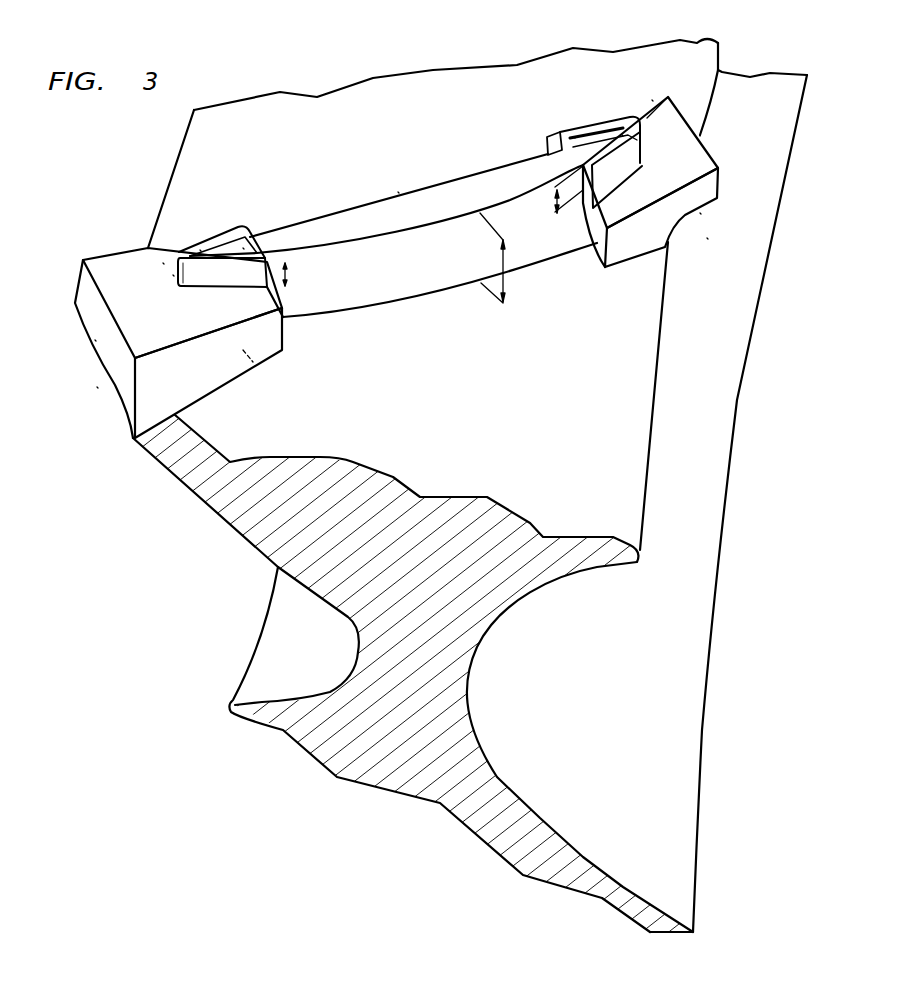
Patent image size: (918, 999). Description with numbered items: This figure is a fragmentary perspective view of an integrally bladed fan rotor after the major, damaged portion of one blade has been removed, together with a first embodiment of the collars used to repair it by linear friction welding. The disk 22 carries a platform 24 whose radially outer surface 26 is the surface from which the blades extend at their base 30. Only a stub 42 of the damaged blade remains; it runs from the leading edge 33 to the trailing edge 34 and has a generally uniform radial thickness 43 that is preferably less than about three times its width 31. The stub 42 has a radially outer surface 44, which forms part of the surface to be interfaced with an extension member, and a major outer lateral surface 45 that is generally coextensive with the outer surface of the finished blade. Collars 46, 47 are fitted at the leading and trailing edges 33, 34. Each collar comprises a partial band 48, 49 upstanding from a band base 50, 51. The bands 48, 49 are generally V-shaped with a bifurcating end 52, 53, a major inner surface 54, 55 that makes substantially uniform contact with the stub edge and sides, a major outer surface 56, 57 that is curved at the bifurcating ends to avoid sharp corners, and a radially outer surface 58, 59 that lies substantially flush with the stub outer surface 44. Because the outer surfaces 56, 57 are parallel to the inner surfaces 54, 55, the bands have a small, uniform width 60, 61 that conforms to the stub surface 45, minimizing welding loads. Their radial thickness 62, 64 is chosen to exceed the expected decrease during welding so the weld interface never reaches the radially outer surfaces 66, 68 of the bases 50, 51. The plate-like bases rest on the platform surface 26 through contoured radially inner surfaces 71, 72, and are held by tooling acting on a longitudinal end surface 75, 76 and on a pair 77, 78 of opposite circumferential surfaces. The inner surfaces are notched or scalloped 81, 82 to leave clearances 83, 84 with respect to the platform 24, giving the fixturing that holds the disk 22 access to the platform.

The disk 22 is at (751, 352).
The platform 24 is at (658, 355).
The radially outer surface 26 is at (597, 498).
The base 30 is at (393, 249).
The width 31 is at (398, 192).
The leading edge 33 is at (622, 135).
The trailing edge 34 is at (200, 250).
The stub portion 42 is at (412, 280).
The radial thickness 43 is at (507, 280).
The radially outer surface 44 is at (432, 200).
The major outer surface 45 is at (377, 285).
The collar 46 is at (692, 257).
The collar 47 is at (57, 192).
The partial band 48 is at (647, 121).
The partial band 49 is at (163, 263).
The band base 50 is at (678, 182).
The band base 51 is at (171, 312).
The bifurcating end 52 is at (603, 145).
The bifurcating end 53 is at (173, 275).
The major inner surface 54 is at (557, 160).
The major inner surface 55 is at (243, 248).
The major outer surface 56 is at (572, 132).
The major outer surface 57 is at (246, 250).
The radially outer surface 58 is at (574, 137).
The radially outer surface 59 is at (200, 248).
The width 60 is at (618, 168).
The width 61 is at (263, 270).
The radial thickness 62 is at (548, 205).
The radial thickness 64 is at (289, 270).
The radially outer surface 66 is at (703, 165).
The radially outer surface 68 is at (100, 258).
The radially inner surface 71 is at (622, 253).
The radially inner surface 72 is at (247, 353).
The longitudinal end surface 75 is at (703, 145).
The longitudinal end surface 76 is at (97, 313).
The circumferential surfaces 77 is at (652, 100).
The circumferential surfaces 78 is at (113, 250).
The notch 81 is at (700, 213).
The notch 82 is at (95, 340).
The clearance 83 is at (707, 238).
The clearance 84 is at (97, 387).